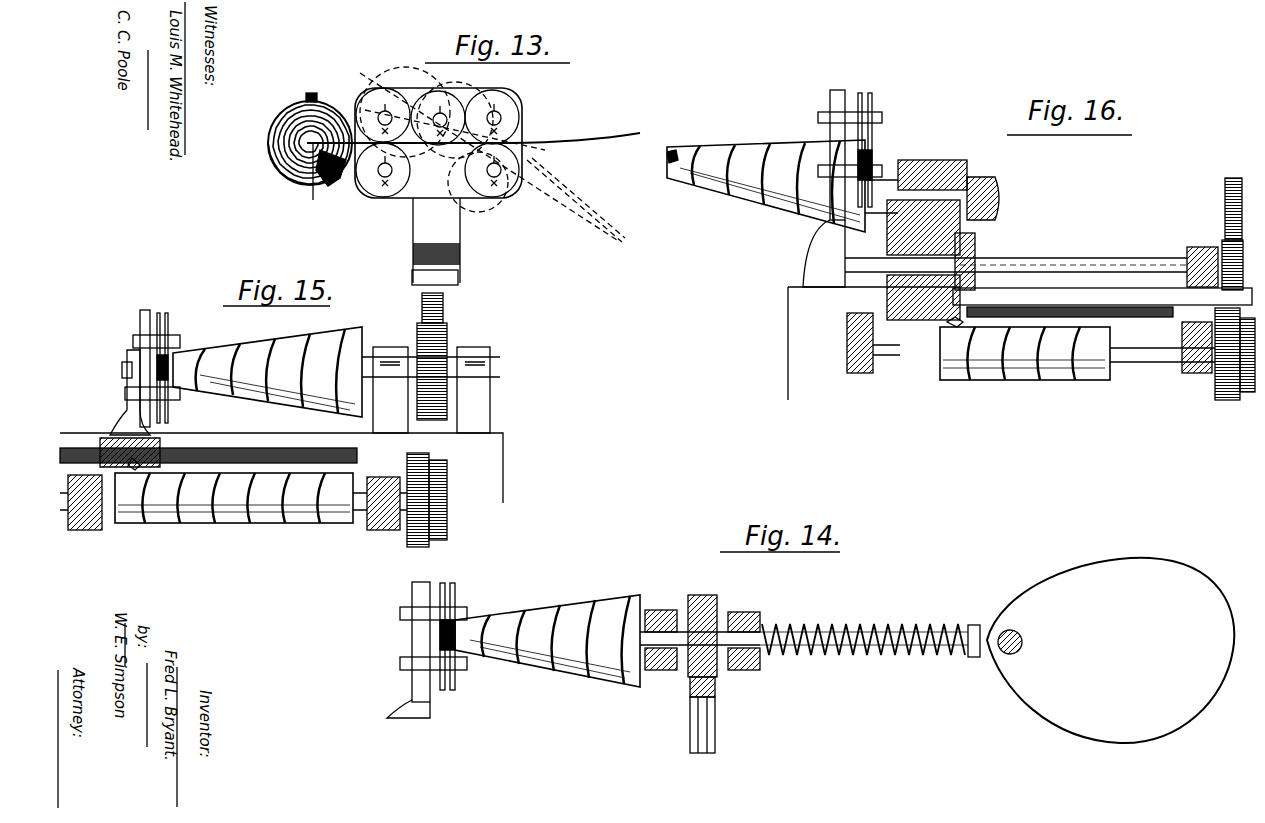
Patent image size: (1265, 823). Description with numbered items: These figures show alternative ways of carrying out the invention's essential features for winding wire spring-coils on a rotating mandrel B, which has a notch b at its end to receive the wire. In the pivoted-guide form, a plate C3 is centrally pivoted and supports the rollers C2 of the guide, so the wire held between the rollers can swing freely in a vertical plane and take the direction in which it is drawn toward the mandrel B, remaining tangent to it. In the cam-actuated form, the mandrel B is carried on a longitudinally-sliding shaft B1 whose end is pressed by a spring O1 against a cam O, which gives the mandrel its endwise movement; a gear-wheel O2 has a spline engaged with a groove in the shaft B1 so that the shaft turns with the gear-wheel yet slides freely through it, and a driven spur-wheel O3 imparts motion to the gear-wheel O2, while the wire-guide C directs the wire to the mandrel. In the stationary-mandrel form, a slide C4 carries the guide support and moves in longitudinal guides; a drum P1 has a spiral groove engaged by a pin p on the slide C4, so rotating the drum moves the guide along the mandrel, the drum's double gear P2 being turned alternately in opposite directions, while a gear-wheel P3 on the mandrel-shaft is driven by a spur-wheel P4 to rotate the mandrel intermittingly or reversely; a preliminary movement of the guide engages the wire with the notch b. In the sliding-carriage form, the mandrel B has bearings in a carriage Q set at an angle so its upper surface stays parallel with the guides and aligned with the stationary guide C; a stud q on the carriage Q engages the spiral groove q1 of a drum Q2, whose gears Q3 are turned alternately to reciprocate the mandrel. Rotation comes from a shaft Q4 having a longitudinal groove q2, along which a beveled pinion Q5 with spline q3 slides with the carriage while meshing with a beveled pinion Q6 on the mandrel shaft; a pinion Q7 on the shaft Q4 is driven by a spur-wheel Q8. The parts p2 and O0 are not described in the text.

In FIG. 13, the mandrel B is at (280, 162).
In FIG. 15, the mandrel B is at (336, 380).
In FIG. 14, the mandrel B is at (607, 641).
In FIG. 16, the mandrel B is at (782, 179).
In FIG. 13, the notch b is at (312, 181).
In FIG. 15, the notch b is at (178, 368).
In FIG. 14, the notch b is at (440, 635).
In FIG. 16, the notch b is at (670, 165).
In FIG. 14, the wire-guide C is at (412, 635).
In FIG. 16, the wire-guide C is at (830, 132).
In FIG. 13, the rollers C2 is at (522, 165).
In FIG. 15, the rollers C2 is at (168, 322).
In FIG. 16, the rollers C2 is at (872, 140).
In FIG. 13, the plate C3 is at (490, 154).
In FIG. 15, the plate C3 is at (145, 312).
In FIG. 15, the slide C4 is at (281, 456).
In FIG. 15, the cam O is at (208, 448).
In FIG. 14, the cam O is at (670, 670).
In FIG. 14, the weight O O0 is at (1110, 650).
In FIG. 14, the spring O1 is at (753, 670).
In FIG. 14, the gear-wheel O2 is at (686, 612).
In FIG. 14, the spur-wheel O3 is at (715, 700).
In FIG. 14, the longitudinally-sliding shaft B1 is at (870, 648).
In FIG. 15, the cylinder or drum P1 is at (233, 501).
In FIG. 15, the double gear P2 is at (449, 480).
In FIG. 15, the gear-wheel P3 is at (447, 335).
In FIG. 15, the spur-wheel P4 is at (437, 296).
In FIG. 15, the pin p is at (142, 468).
In FIG. 15, the groove p2 is at (192, 523).
In FIG. 16, the sliding carriage Q is at (937, 166).
In FIG. 16, the drum or cylinder Q2 is at (1048, 305).
In FIG. 16, the gears Q3 is at (1230, 400).
In FIG. 16, the shaft Q4 is at (1110, 262).
In FIG. 16, the beveled pinion Q5 is at (978, 250).
In FIG. 16, the beveled pinion Q6 is at (985, 190).
In FIG. 16, the pinion Q7 is at (1077, 351).
In FIG. 16, the spur-wheel Q8 is at (1225, 210).
In FIG. 16, the stud q is at (951, 327).
In FIG. 16, the spiral groove q1 is at (992, 392).
In FIG. 16, the longitudinal groove q2 is at (1020, 262).
In FIG. 16, the spline q3 is at (980, 275).